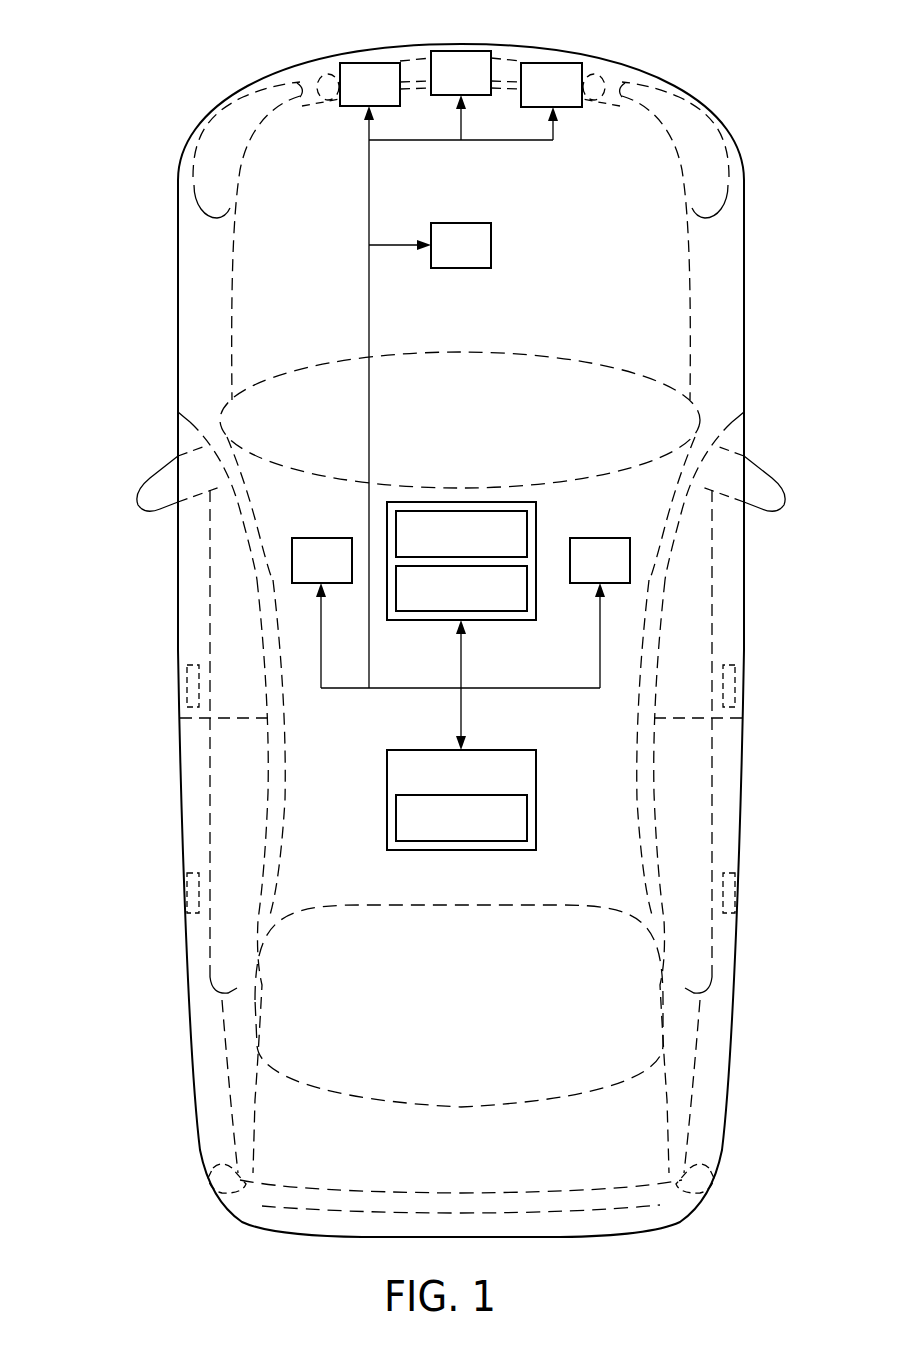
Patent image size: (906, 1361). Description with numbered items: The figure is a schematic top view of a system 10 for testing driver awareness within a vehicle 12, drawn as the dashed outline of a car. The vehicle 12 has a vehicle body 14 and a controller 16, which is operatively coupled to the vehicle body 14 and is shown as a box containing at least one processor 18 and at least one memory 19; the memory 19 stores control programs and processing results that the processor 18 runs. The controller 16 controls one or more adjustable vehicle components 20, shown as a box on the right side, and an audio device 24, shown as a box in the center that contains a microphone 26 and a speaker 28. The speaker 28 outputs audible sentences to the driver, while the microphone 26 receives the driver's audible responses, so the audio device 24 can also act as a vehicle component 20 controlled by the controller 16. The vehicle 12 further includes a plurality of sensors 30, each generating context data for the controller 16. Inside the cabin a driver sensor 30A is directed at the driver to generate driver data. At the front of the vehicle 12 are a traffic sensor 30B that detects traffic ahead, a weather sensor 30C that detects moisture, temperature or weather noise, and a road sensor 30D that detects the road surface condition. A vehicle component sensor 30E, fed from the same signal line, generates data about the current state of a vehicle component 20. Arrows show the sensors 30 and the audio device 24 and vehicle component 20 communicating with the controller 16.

The system 10 is at (70, 607).
The vehicle 12 is at (177, 315).
The vehicle body 14 is at (745, 830).
The controller 16 is at (536, 820).
The processor 18 is at (448, 783).
The memory 19 is at (448, 828).
The vehicle component 20 is at (587, 572).
The audio device 24 is at (537, 518).
The microphone 26 is at (448, 546).
The speaker 28 is at (448, 599).
The sensor 30 is at (460, 295).
The driver sensor 30A is at (309, 538).
The traffic sensor 30B is at (470, 50).
The weather sensor 30C is at (558, 63).
The road sensor 30D is at (372, 62).
The vehicle component sensor 30E is at (470, 222).